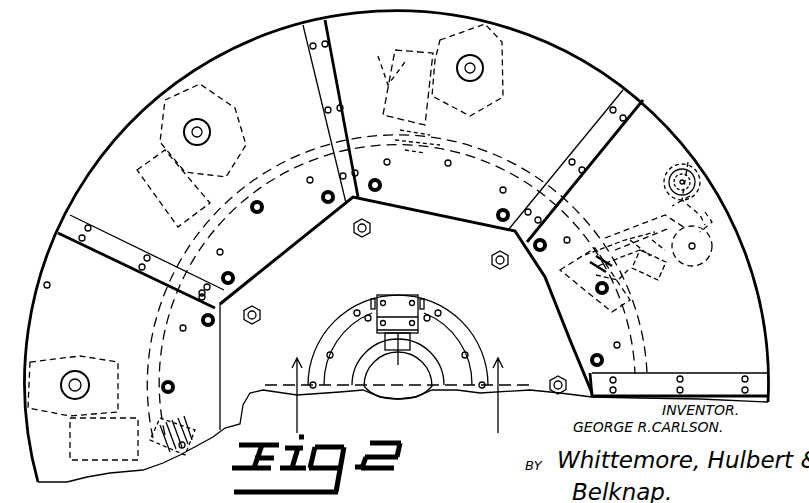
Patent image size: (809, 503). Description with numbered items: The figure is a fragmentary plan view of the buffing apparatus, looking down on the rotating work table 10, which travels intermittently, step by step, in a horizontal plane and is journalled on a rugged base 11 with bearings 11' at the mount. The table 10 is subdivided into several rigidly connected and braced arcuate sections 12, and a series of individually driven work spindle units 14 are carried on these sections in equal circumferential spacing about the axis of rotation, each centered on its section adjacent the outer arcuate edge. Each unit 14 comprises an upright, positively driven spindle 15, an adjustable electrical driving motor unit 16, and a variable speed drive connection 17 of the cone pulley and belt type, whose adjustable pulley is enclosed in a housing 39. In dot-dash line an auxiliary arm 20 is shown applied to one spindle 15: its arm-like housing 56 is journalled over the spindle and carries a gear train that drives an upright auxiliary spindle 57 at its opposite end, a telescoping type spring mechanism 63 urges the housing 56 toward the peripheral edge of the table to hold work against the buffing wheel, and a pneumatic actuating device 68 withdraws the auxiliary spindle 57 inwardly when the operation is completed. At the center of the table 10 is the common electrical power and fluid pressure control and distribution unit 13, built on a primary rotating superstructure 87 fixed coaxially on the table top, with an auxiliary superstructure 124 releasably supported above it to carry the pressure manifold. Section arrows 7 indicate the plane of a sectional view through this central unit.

The work table 10 is at (254, 40).
The base 11 is at (397, 280).
The bearings 11' is at (307, 292).
The arcuate sections 12 is at (556, 66).
The electrical power and fluid pressure control and distribution unit 13 is at (427, 298).
The work spindle units 14 is at (146, 142).
The spindle 15 is at (471, 68).
The electrical driving motor unit 16 is at (210, 117).
The variable speed drive connection 17 is at (148, 177).
The auxiliary arm 20 is at (702, 190).
The housing 39 is at (397, 80).
The auxiliary arm-like housing 56 is at (712, 212).
The auxiliary spindle 57 is at (685, 160).
The telescoping type spring mechanism 63 is at (636, 257).
The pneumatic actuating device 68 is at (604, 232).
The primary rotating superstructure 87 is at (472, 346).
The auxiliary superstructure 124 is at (430, 345).
The section line 7- 7 is at (397, 395).